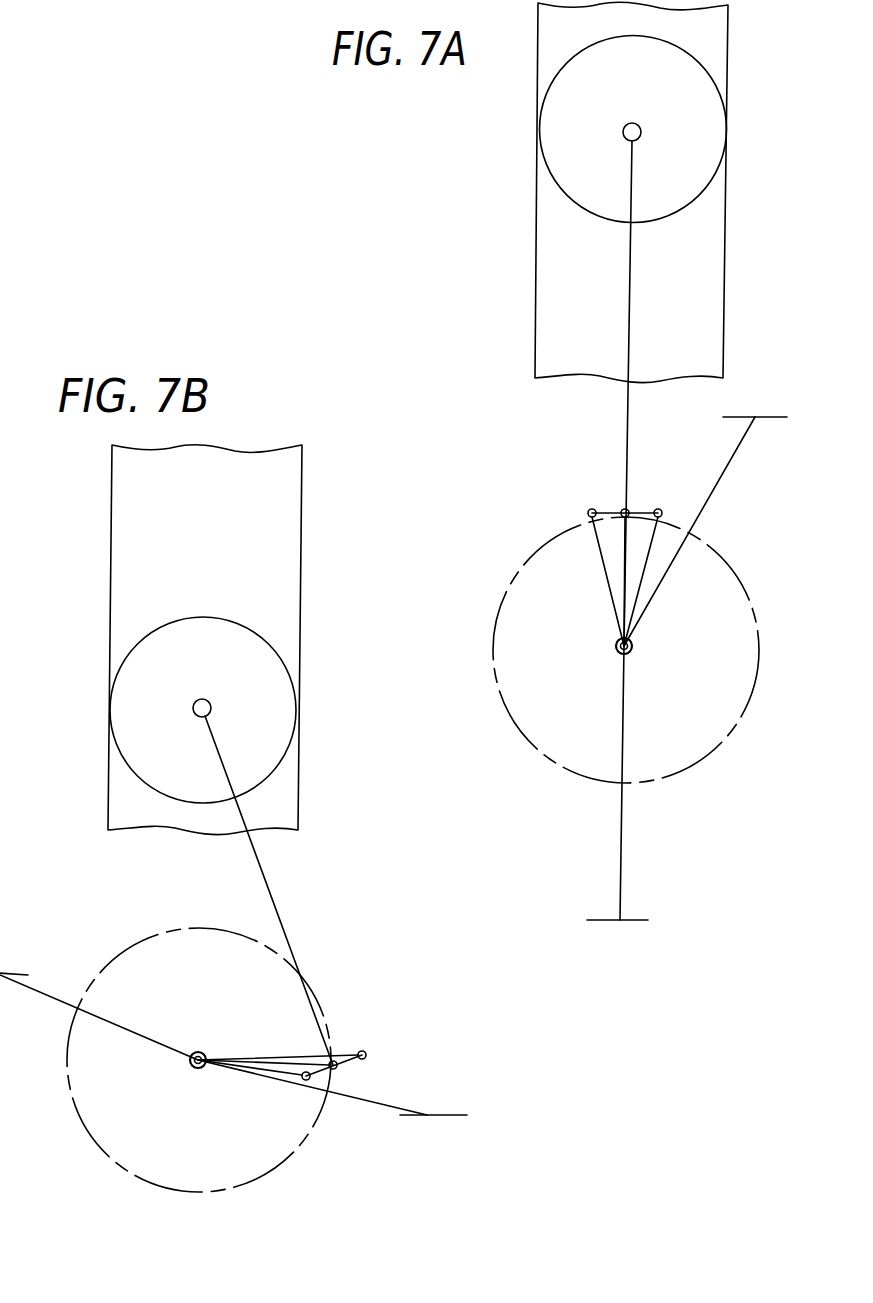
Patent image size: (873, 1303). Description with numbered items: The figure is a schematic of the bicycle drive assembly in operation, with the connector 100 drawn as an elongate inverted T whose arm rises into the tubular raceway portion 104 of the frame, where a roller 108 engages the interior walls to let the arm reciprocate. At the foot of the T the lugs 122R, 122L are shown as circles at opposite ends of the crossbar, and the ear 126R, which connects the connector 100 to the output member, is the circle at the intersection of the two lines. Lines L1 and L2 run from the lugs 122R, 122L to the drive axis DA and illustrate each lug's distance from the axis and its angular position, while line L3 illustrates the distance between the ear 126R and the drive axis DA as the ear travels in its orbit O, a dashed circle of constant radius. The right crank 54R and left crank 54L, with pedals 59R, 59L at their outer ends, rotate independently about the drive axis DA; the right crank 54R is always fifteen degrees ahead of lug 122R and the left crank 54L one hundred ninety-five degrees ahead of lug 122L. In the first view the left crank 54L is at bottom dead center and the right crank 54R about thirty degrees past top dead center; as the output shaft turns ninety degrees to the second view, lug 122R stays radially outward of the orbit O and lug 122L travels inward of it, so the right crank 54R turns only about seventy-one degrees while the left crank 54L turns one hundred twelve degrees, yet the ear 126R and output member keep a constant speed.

In FIG. 7A, the raceway portion 104 is at (540, 162).
In FIG. 7B, the raceway portion 104 is at (112, 483).
In FIG. 7A, the roller 108 is at (698, 64).
In FIG. 7B, the roller 108 is at (263, 636).
In FIG. 7A, the connector 100 is at (632, 272).
In FIG. 7B, the connector 100 is at (268, 878).
In FIG. 7A, the right pedal 59R is at (738, 417).
In FIG. 7B, the right pedal 59R is at (447, 1117).
In FIG. 7A, the left pedal 59L is at (637, 920).
In FIG. 7B, the left pedal 59L is at (16, 936).
In FIG. 7A, the right crank 54R is at (730, 460).
In FIG. 7B, the right crank 54R is at (380, 1103).
In FIG. 7A, the left crank 54L is at (622, 845).
In FIG. 7B, the left crank 54L is at (45, 997).
In FIG. 7A, the left lug 122L is at (592, 509).
In FIG. 7B, the left lug 122L is at (300, 1088).
In FIG. 7A, the right lug 122R is at (658, 509).
In FIG. 7B, the right lug 122R is at (362, 1050).
In FIG. 7A, the ear 126R is at (626, 509).
In FIG. 7B, the ear 126R is at (340, 1058).
In FIG. 7A, the line L1 is at (637, 597).
In FIG. 7B, the line L1 is at (300, 1052).
In FIG. 7A, the line L2 is at (612, 604).
In FIG. 7B, the line L2 is at (247, 1055).
In FIG. 7A, the line L3 is at (620, 572).
In FIG. 7B, the line L3 is at (272, 1055).
In FIG. 7A, the drive axis DA is at (633, 653).
In FIG. 7B, the drive axis DA is at (193, 1067).
In FIG. 7A, the orbit O is at (788, 608).
In FIG. 7B, the orbit O is at (72, 1107).